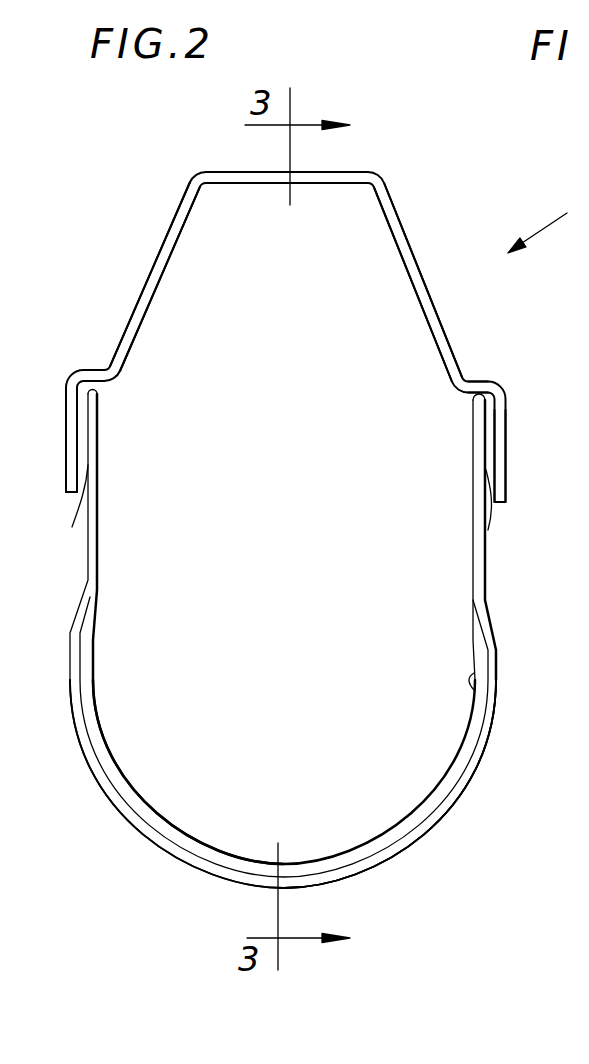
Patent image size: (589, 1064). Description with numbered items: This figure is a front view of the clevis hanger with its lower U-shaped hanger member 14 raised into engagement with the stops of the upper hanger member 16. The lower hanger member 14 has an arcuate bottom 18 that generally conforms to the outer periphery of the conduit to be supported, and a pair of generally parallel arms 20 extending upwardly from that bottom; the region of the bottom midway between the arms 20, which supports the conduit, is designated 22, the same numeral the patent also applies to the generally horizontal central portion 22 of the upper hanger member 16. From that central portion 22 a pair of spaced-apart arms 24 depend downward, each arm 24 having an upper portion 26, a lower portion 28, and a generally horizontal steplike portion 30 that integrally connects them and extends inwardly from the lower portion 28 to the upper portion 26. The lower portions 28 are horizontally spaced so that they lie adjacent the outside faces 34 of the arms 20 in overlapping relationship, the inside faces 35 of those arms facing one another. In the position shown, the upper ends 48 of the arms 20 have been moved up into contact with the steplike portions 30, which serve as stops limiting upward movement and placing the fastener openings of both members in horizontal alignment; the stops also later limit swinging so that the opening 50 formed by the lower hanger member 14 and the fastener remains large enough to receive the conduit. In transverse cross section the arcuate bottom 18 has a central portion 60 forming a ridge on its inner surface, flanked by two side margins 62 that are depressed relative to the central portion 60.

The lower U-shaped hanger member 14 is at (485, 750).
The upper hanger member 16 is at (402, 208).
The arcuate bottom 18 is at (396, 855).
The arms 20 is at (98, 512).
The central portion 22 is at (335, 176).
The arms 24 is at (181, 237).
The upper portion 26 is at (147, 288).
The lower portion 28 is at (70, 440).
The steplike portion 30 is at (88, 378).
The outside faces 34 is at (515, 557).
The inside faces 35 is at (100, 438).
The upper ends 48 is at (97, 390).
The opening 50 is at (477, 692).
The central portion 60 is at (152, 810).
The side margins 62 is at (96, 732).